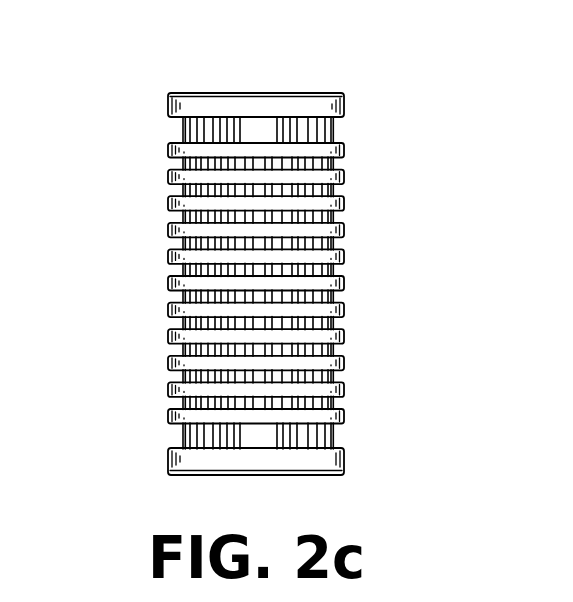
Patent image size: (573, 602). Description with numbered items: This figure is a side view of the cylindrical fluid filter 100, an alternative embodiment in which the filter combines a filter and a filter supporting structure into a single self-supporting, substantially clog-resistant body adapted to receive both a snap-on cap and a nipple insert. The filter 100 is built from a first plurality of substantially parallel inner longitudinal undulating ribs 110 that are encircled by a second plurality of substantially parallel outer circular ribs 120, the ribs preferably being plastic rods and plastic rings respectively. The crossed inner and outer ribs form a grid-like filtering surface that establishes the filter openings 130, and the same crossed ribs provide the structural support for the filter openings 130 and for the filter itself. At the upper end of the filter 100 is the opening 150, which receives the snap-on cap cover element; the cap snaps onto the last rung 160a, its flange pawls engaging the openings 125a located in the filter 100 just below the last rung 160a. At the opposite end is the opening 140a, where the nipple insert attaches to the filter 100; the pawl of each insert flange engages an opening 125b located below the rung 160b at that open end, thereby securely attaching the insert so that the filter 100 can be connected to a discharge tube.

The cylindrical fluid filter 100 is at (419, 277).
The inner longitudinal undulating ribs 110 is at (169, 190).
The outer circular ribs 120 is at (168, 205).
The openings below last rung 125a is at (247, 129).
The opening at open end 125b is at (267, 437).
The filter openings 130 is at (313, 191).
The opening 140a is at (223, 476).
The opening 150 is at (275, 93).
The last rung 160a is at (313, 104).
The rung 160b is at (188, 461).